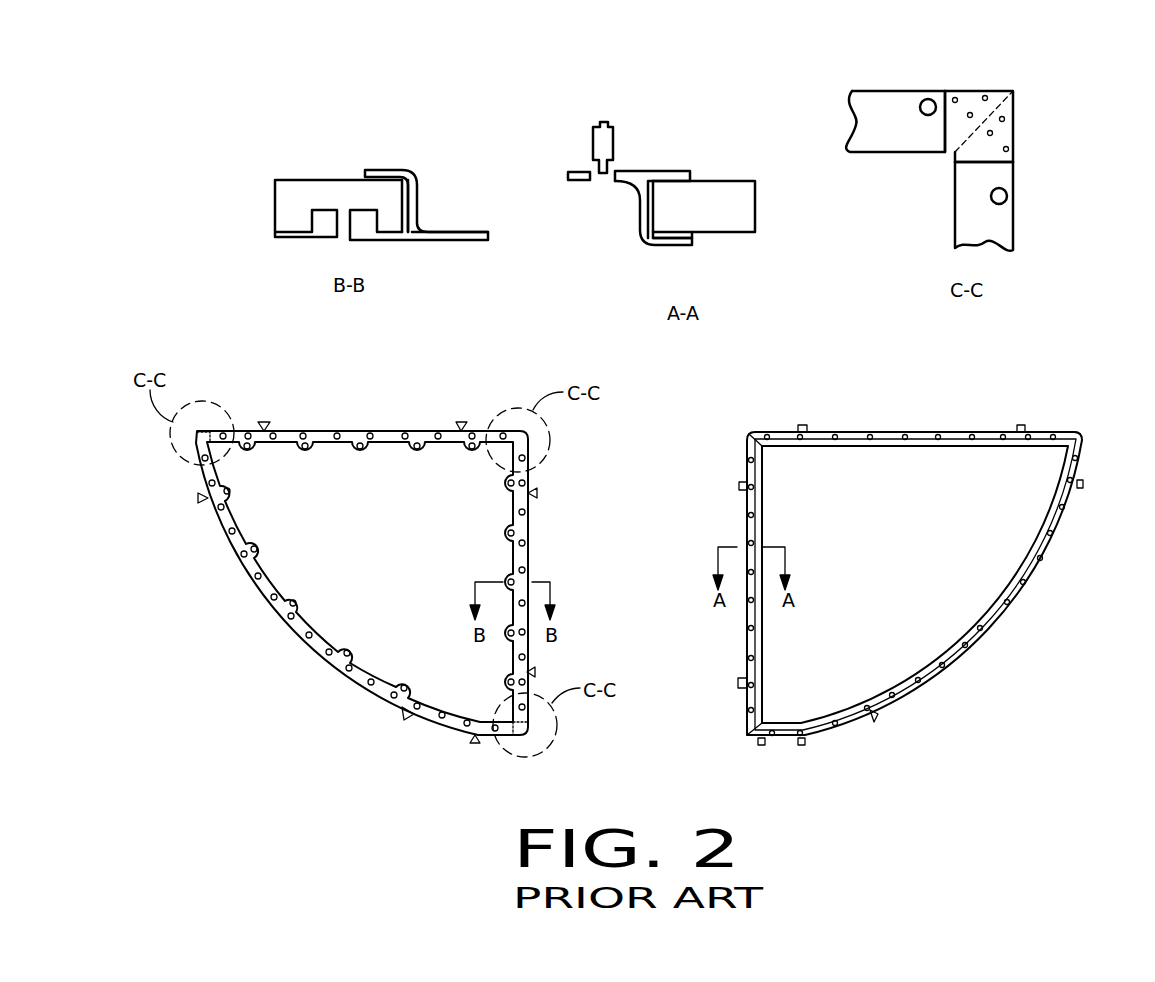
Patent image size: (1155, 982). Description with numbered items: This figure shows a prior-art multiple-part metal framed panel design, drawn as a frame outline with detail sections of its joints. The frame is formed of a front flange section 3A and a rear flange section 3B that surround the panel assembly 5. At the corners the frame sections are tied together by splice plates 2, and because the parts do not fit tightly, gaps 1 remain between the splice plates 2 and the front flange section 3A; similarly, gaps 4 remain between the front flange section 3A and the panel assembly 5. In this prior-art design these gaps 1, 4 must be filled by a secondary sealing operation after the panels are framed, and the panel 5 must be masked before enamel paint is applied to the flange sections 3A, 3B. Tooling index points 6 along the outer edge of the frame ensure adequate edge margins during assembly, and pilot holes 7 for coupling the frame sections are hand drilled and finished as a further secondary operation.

The gap 1 is at (947, 92).
The splice plate 2 is at (988, 93).
The front flange section 3A is at (393, 168).
The rear flange section 3B is at (420, 240).
The gap 4 is at (694, 237).
The panel assembly 5 is at (300, 192).
The tooling index point 6 is at (264, 421).
The pilot hole 7 is at (337, 428).